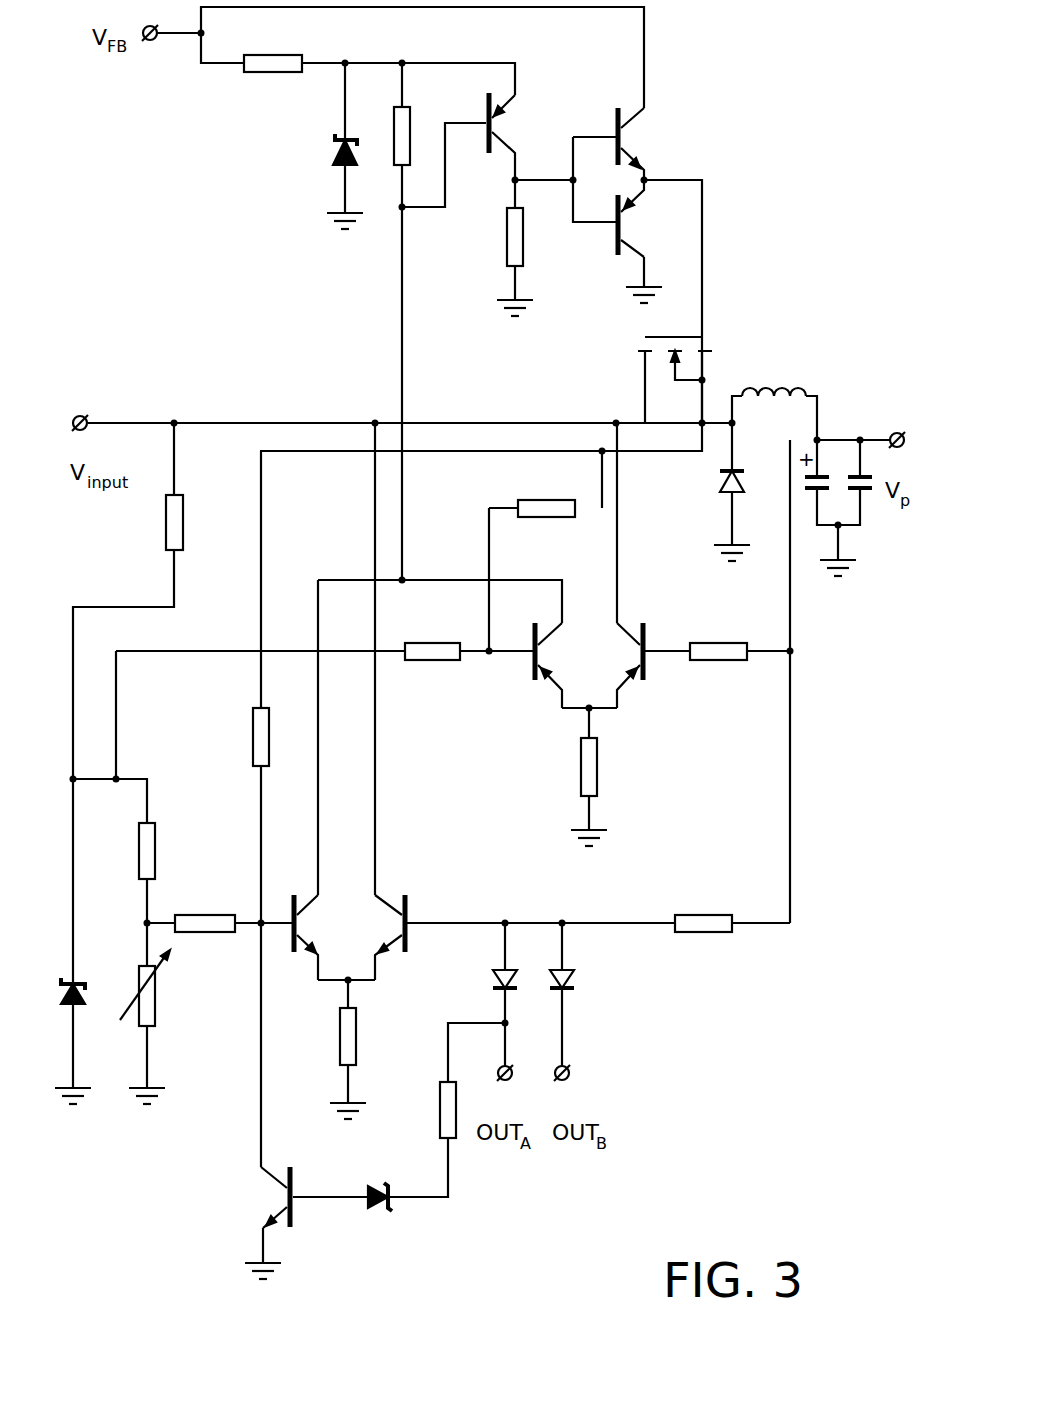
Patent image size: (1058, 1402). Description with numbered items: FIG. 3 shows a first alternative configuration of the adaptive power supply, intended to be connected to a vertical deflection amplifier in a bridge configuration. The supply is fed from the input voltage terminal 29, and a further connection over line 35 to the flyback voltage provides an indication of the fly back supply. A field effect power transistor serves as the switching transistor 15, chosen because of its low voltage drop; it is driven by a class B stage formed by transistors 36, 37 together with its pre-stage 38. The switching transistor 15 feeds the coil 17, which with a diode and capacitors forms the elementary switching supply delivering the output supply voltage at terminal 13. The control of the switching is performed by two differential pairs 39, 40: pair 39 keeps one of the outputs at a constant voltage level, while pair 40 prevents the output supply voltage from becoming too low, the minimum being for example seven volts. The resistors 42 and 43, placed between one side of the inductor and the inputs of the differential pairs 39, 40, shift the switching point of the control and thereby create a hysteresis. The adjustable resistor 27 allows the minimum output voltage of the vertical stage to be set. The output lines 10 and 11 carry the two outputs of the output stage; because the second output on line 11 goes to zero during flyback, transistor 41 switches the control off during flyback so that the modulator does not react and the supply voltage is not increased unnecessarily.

The line to V_FB 35 is at (177, 37).
The pre-stage 38 is at (506, 118).
The transistor 36 is at (636, 133).
The transistor 37 is at (613, 243).
The switching transistor 15 is at (729, 338).
The coil 17 is at (782, 383).
The output voltage terminal 13 is at (895, 430).
The V_input terminal 29 is at (82, 415).
The resistor 43 is at (545, 500).
The differential pair 40 is at (542, 690).
The differential pair 39 is at (400, 870).
The resistor 42 is at (252, 742).
The adjustable resistor 27 is at (157, 1013).
The line OUT_A 10 is at (503, 1013).
The line OUT_B 11 is at (565, 1030).
The transistor 41 is at (270, 1204).